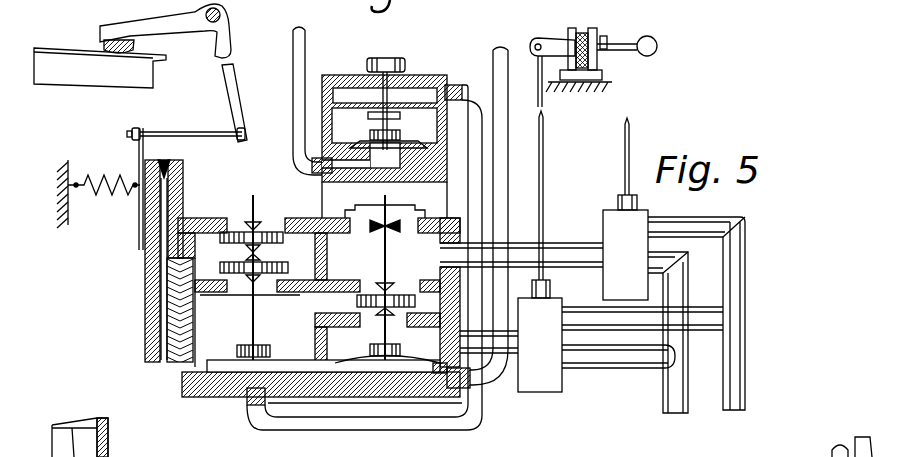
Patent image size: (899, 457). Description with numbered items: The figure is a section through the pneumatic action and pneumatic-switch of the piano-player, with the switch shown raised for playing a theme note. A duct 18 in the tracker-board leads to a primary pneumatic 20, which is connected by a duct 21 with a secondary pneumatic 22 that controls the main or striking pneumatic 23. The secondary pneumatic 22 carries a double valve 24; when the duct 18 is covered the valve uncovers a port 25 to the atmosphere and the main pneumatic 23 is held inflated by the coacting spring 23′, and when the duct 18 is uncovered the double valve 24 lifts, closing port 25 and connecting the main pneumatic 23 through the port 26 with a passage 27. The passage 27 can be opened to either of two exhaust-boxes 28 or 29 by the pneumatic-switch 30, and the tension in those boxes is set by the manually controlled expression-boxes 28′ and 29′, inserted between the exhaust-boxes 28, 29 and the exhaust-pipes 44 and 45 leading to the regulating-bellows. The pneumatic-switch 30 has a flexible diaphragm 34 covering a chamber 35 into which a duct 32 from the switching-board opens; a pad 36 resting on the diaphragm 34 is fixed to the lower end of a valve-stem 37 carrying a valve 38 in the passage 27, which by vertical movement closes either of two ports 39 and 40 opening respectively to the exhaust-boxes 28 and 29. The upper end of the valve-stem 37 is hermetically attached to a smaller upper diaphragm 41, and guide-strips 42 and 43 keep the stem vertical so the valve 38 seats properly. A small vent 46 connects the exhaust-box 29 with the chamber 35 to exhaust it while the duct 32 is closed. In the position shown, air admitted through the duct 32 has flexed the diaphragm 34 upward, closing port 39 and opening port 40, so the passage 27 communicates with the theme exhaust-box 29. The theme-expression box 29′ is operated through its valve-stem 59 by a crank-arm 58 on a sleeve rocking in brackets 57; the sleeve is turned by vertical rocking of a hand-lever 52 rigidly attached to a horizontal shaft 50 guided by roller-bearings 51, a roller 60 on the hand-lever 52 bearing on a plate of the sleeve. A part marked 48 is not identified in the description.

The duct 18 is at (296, 50).
The primary pneumatic 20 is at (400, 128).
The duct 21 is at (477, 404).
The secondary pneumatic 22 is at (208, 372).
The main or striking pneumatic 23 is at (157, 230).
The spring 23′ is at (116, 178).
The double valve 24 is at (220, 268).
The port 25 is at (262, 236).
The port 26 is at (167, 342).
The passage 27 is at (365, 302).
The exhaust-box 28 is at (399, 285).
The accompaniment-expression box 28′ is at (625, 247).
The exhaust-box 29 is at (487, 386).
The theme-expression box 29′ is at (591, 336).
The pneumatic-switch 30 is at (387, 343).
The duct 32 is at (493, 80).
The diaphragm 34 is at (403, 357).
The chamber 35 is at (410, 364).
The pad 36 is at (378, 357).
The valve-stem 37 is at (357, 322).
The valve 38 is at (440, 300).
The port 39 is at (405, 280).
The port 40 is at (300, 323).
The flexible diaphragm 41 is at (393, 224).
The guide-strip 42 is at (378, 218).
The guide-strip 43 is at (246, 410).
The exhaust-pipe 44 is at (672, 414).
The exhaust-pipe 45 is at (737, 410).
The vent 46 is at (440, 373).
The fragment 48 is at (745, 456).
The horizontal shaft 50 is at (572, 30).
The roller-bearings 51 is at (586, 33).
The hand-lever 52 is at (658, 49).
The brackets 57 is at (589, 58).
The crank-arm 58 is at (553, 47).
The valve-stem 59 is at (545, 207).
The roller or wheel 60 is at (608, 42).